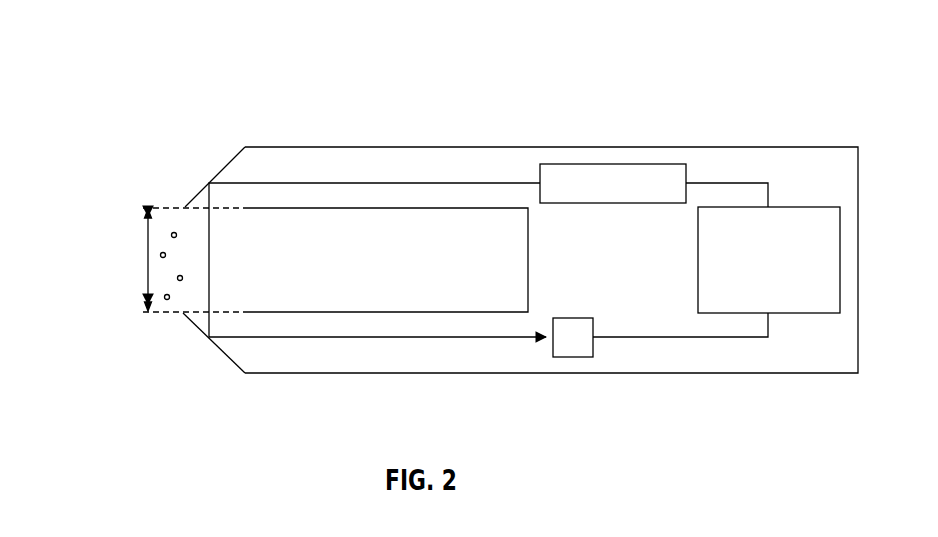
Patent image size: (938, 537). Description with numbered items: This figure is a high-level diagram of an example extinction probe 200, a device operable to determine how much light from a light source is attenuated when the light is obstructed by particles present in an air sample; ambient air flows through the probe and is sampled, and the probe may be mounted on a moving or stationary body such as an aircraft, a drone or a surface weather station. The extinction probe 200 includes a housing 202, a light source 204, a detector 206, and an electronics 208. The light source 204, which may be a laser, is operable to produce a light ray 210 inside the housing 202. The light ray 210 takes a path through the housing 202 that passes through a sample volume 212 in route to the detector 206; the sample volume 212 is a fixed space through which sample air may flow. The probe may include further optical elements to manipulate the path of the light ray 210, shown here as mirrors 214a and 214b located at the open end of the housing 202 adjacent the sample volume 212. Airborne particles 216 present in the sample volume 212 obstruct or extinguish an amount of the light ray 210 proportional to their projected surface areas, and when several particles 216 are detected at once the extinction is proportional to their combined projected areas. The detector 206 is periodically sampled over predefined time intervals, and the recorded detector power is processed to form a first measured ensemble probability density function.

The extinction probe 200 is at (102, 42).
The housing 202 is at (325, 147).
The light source 204 is at (613, 165).
The detector 206 is at (573, 337).
The electronics 208 is at (816, 295).
The light ray 210 is at (438, 182).
The sample volume 212 is at (143, 297).
The mirror 214a is at (227, 165).
The mirror 214b is at (228, 357).
The airborne particles 216 is at (163, 240).